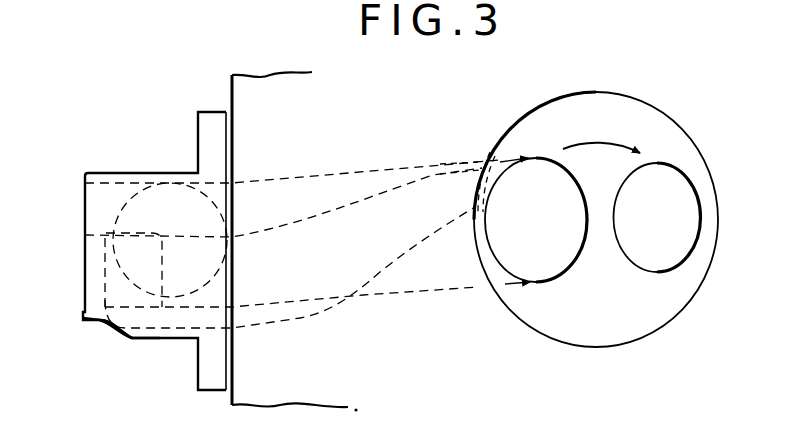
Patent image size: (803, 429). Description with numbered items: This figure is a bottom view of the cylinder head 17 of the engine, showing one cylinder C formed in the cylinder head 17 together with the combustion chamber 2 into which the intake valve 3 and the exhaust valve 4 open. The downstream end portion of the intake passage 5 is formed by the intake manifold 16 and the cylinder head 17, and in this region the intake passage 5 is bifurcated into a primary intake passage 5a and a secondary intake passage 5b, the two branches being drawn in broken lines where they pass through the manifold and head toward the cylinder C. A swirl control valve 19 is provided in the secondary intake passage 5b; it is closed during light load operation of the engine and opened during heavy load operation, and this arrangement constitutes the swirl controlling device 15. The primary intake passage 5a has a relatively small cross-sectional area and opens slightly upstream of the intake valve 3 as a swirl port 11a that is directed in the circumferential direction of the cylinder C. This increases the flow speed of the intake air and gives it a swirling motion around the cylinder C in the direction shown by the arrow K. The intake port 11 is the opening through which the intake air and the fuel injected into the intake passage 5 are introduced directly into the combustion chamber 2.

The combustion chamber 2 is at (670, 140).
The intake valve 3 is at (561, 262).
The exhaust valve 4 is at (660, 266).
The intake passage 5 is at (99, 219).
The primary intake passage 5a is at (392, 262).
The secondary intake passage 5b is at (327, 177).
The intake port 11 is at (502, 288).
The swirl port 11a is at (487, 150).
The swirl controlling device 15 is at (125, 205).
The intake manifold 16 is at (128, 342).
The cylinder head 17 is at (231, 94).
The swirl control valve 19 is at (167, 205).
The arrow K is at (601, 134).
The cylinder C is at (640, 325).